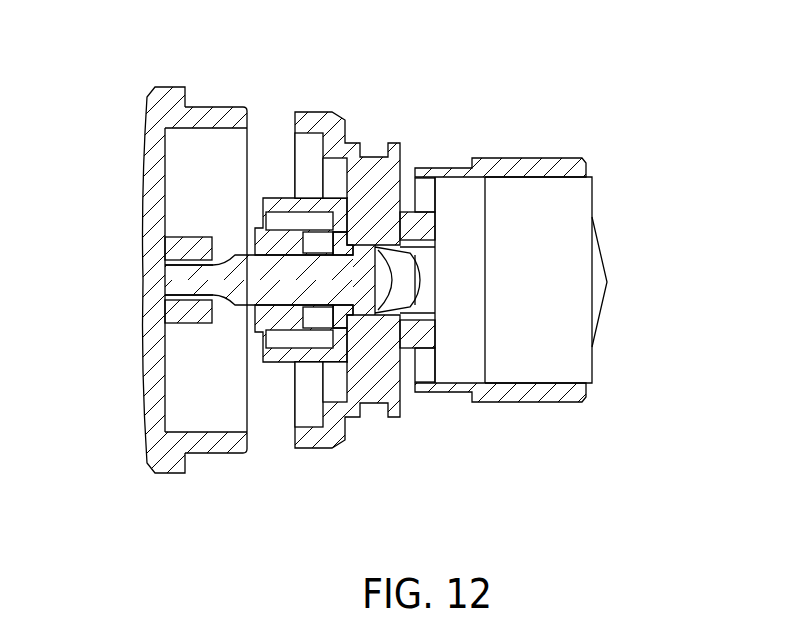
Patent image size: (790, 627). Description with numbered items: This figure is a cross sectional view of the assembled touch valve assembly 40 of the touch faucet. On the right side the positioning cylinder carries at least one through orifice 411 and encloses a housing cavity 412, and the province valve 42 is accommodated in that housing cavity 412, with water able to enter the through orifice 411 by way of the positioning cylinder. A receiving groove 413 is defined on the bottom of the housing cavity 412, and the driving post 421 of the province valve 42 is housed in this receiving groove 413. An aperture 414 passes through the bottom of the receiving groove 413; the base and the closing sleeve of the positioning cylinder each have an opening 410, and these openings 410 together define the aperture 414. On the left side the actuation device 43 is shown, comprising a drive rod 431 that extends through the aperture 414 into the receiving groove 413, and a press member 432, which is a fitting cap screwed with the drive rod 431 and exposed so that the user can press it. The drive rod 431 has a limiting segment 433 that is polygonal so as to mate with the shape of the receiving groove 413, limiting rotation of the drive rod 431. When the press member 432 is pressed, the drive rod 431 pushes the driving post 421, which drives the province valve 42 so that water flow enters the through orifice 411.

The touch valve assembly 40 is at (549, 262).
The province valve 42 is at (600, 248).
The actuation device 43 is at (128, 125).
The opening 410 is at (290, 295).
The through orifice 411 is at (427, 197).
The housing cavity 412 is at (527, 387).
The receiving groove 413 is at (405, 393).
The aperture 414 is at (320, 187).
The driving post 421 is at (389, 262).
The drive rod 431 is at (317, 293).
The press member 432 is at (217, 107).
The limiting segment 433 is at (360, 338).